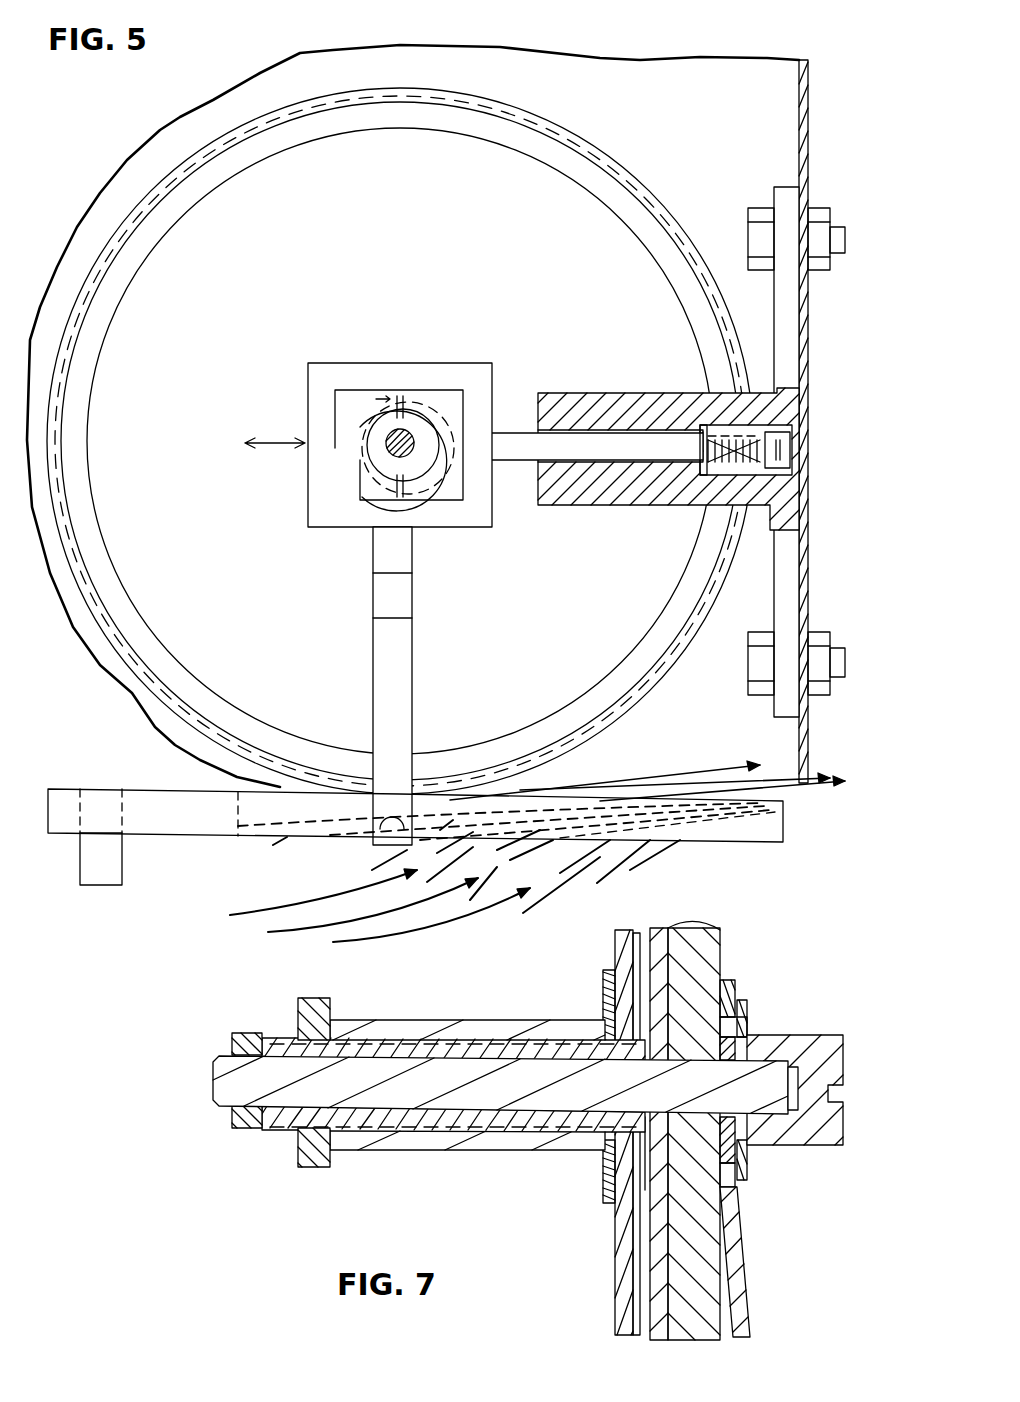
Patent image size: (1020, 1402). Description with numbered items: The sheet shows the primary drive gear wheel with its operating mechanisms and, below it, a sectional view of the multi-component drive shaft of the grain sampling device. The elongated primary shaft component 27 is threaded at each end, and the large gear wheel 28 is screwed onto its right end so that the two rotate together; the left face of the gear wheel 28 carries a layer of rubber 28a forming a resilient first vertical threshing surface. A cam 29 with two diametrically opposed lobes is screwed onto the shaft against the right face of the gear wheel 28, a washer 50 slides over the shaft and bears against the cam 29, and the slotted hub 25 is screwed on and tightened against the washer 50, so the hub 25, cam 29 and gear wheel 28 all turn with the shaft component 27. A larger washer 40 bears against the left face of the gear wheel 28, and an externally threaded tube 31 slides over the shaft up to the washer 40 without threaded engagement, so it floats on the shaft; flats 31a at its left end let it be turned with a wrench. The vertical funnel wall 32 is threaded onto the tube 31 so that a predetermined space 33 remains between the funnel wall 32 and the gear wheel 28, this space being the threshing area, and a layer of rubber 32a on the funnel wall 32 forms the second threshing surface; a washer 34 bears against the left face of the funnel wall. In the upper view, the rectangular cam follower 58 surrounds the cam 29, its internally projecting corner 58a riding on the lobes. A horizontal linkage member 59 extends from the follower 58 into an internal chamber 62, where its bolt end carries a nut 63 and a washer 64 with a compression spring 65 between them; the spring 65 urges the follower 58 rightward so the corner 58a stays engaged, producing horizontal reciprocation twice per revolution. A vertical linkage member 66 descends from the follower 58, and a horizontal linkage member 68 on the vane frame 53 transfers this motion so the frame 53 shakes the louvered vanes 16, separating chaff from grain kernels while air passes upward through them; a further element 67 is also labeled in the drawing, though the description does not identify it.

In FIG. 5, the vanes 16 is at (383, 862).
In FIG. 7, the slotted hub 25 is at (812, 1035).
In FIG. 5, the primary shaft component 27 is at (405, 437).
In FIG. 7, the primary shaft component 27 is at (412, 1075).
In FIG. 5, the gear wheel 28 is at (218, 205).
In FIG. 7, the gear wheel 28 is at (707, 950).
In FIG. 5, the layer of rubber 28a is at (412, 227).
In FIG. 7, the layer of rubber 28a is at (670, 923).
In FIG. 5, the cam 29 is at (377, 473).
In FIG. 7, the cam 29 is at (730, 1027).
In FIG. 7, the externally threaded tube 31 is at (562, 1025).
In FIG. 7, the flats 31a is at (272, 1040).
In FIG. 7, the vertical funnel wall 32 is at (618, 942).
In FIG. 7, the layer of rubber 32a is at (640, 930).
In FIG. 7, the space 33 is at (640, 1292).
In FIG. 7, the washer 34 is at (602, 1173).
In FIG. 7, the washer 40 is at (640, 1180).
In FIG. 5, the washer 50 is at (355, 407).
In FIG. 5, the vane frame 53 is at (745, 828).
In FIG. 5, the cam follower 58 is at (368, 415).
In FIG. 7, the cam follower 58 is at (730, 980).
In FIG. 5, the internally projecting corner 58a is at (358, 457).
In FIG. 5, the linkage member 59 is at (553, 445).
In FIG. 5, the internal chamber 62 is at (808, 422).
In FIG. 5, the nut 63 is at (780, 448).
In FIG. 5, the washer 64 is at (782, 374).
In FIG. 5, the compression spring 65 is at (705, 466).
In FIG. 5, the vertical linkage member 66 is at (377, 653).
In FIG. 7, the vertical linkage member 66 is at (747, 1307).
In FIG. 5, the housing block 67 is at (636, 392).
In FIG. 5, the horizontal linkage member 68 is at (430, 840).